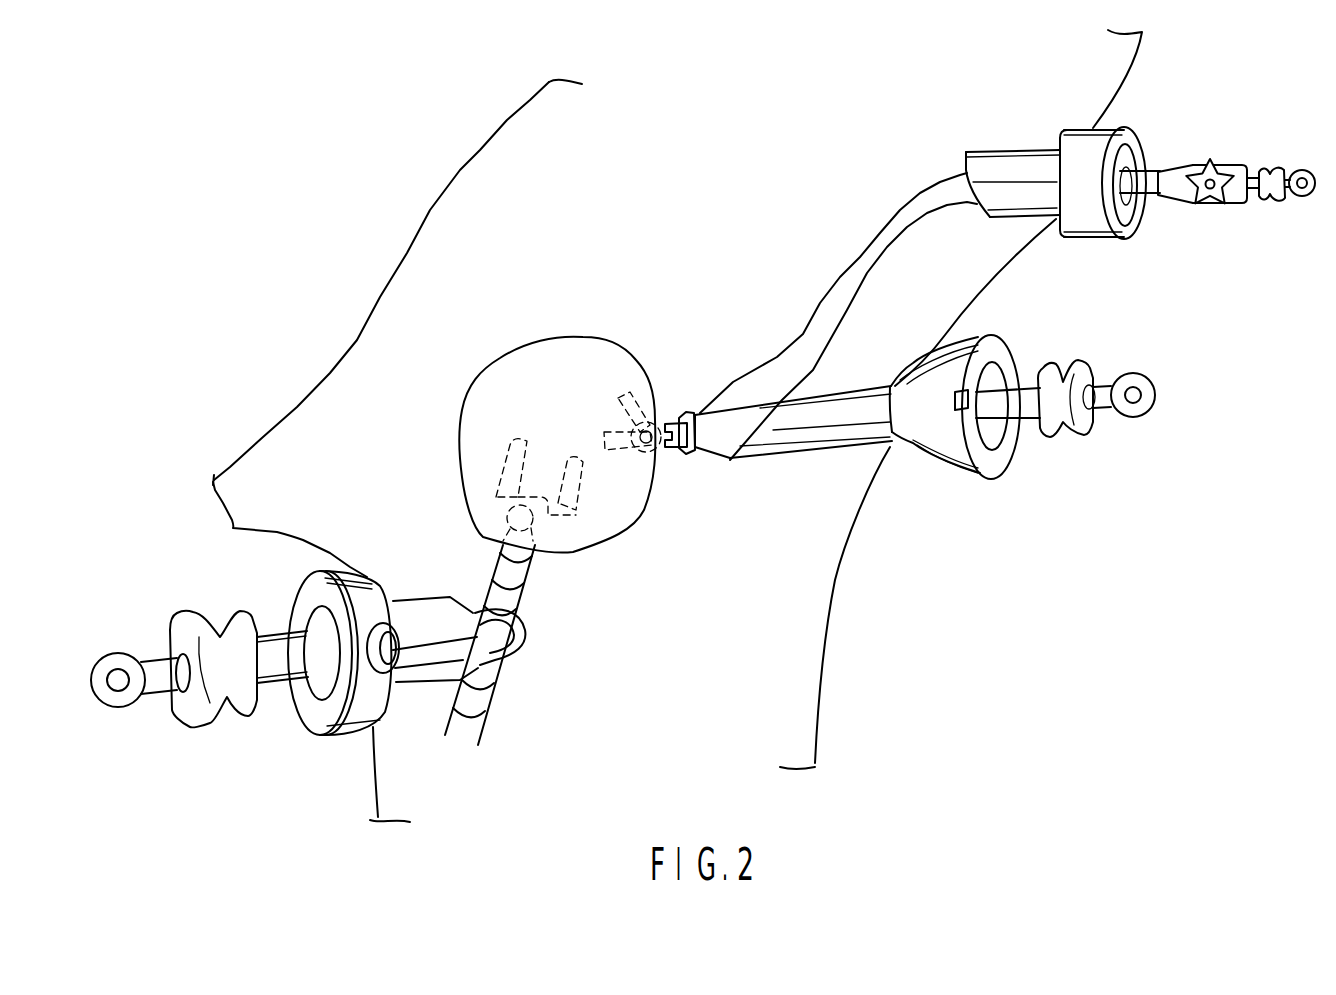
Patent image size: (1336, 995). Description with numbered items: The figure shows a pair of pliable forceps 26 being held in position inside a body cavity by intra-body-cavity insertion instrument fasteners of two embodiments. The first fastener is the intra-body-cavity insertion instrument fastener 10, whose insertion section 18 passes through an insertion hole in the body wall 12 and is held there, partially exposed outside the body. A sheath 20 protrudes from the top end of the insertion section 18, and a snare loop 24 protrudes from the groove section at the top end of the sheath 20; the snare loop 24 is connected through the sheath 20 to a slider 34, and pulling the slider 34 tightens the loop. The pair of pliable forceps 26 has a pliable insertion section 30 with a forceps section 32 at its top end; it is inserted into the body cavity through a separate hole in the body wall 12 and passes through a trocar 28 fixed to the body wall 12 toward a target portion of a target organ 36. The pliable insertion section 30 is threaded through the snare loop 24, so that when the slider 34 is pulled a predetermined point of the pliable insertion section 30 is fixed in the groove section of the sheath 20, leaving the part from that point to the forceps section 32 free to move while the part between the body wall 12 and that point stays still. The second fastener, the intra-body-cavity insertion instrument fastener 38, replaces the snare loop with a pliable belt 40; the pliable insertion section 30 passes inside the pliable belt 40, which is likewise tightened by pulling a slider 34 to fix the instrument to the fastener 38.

The intra-body-cavity insertion instrument fastener 10 is at (910, 460).
The body wall 12 is at (823, 650).
The insertion section 18 is at (943, 463).
The sheath 20 is at (711, 444).
The snare loop 24 is at (688, 453).
The pair of pliable forceps 26 is at (1194, 157).
The trocar 28 is at (1107, 240).
The pliable insertion section 30 is at (863, 255).
The forceps section 32 is at (516, 440).
The slider 34 is at (1139, 418).
The target organ 36 is at (572, 336).
The intra-body-cavity insertion instrument fastener 38 is at (294, 736).
The pliable belt 40 is at (527, 642).